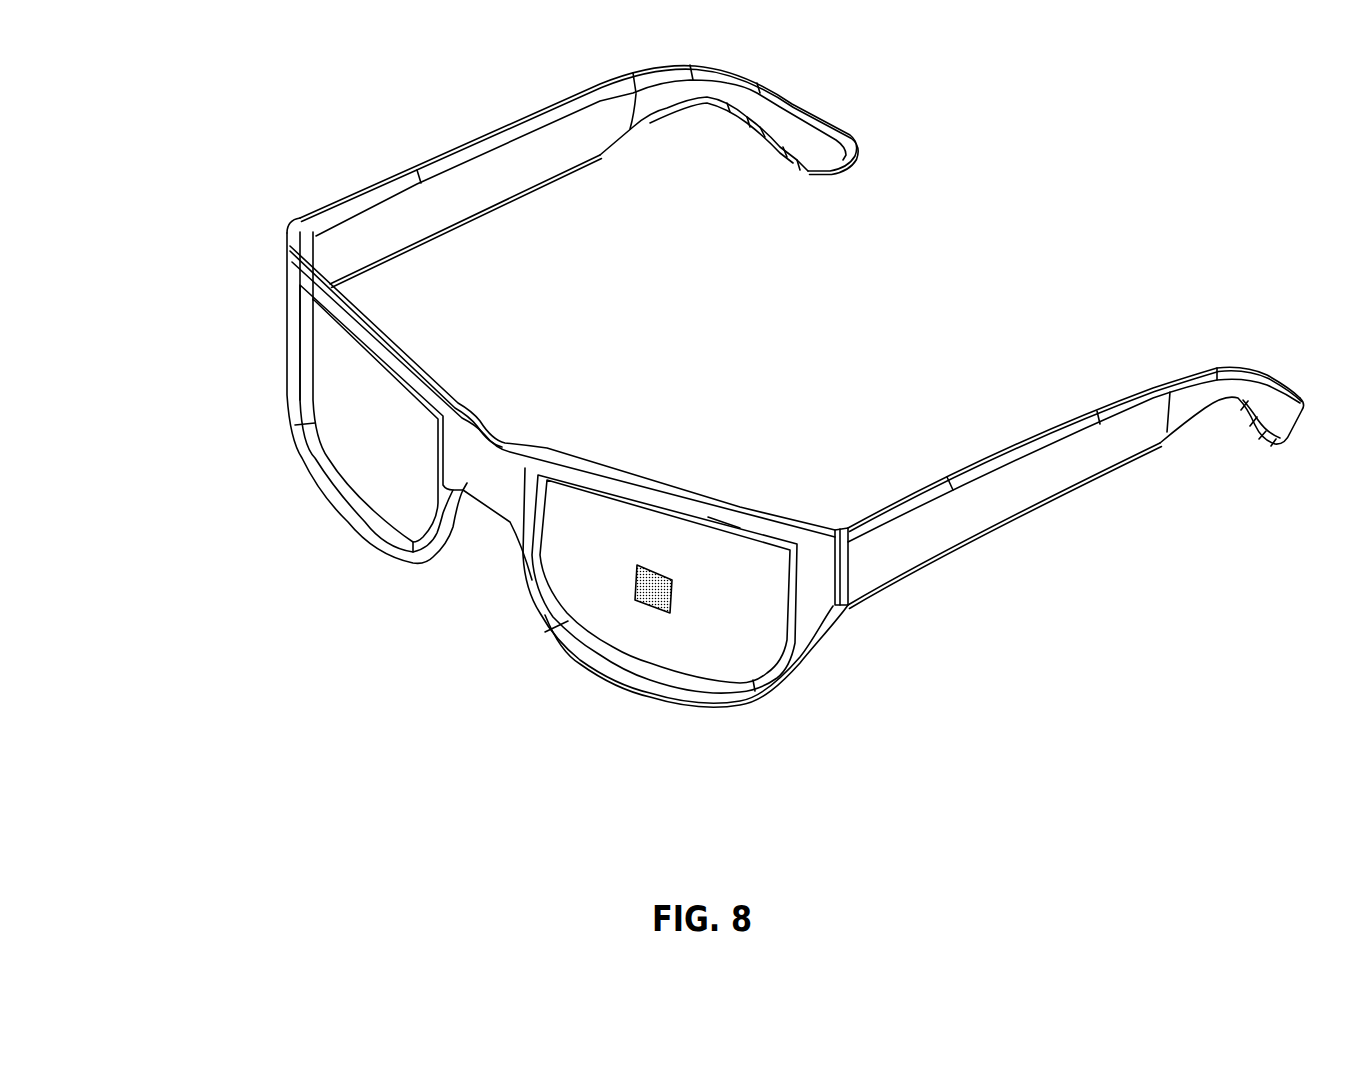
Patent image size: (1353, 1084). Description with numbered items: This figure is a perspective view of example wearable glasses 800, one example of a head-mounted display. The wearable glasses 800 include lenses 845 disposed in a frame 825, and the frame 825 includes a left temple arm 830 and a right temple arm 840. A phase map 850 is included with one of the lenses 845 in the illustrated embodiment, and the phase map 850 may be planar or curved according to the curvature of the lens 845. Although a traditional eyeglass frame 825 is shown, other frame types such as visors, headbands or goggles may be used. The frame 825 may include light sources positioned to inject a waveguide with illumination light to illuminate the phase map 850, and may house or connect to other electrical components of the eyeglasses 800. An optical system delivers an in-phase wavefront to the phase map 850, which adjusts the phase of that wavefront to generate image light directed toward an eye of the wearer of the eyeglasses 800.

The wearable glasses 800 is at (305, 150).
The frame 825 is at (287, 248).
The left temple arm 830 is at (1070, 486).
The right temple arm 840 is at (553, 173).
The lenses 845 is at (358, 390).
The phase map 850 is at (648, 606).